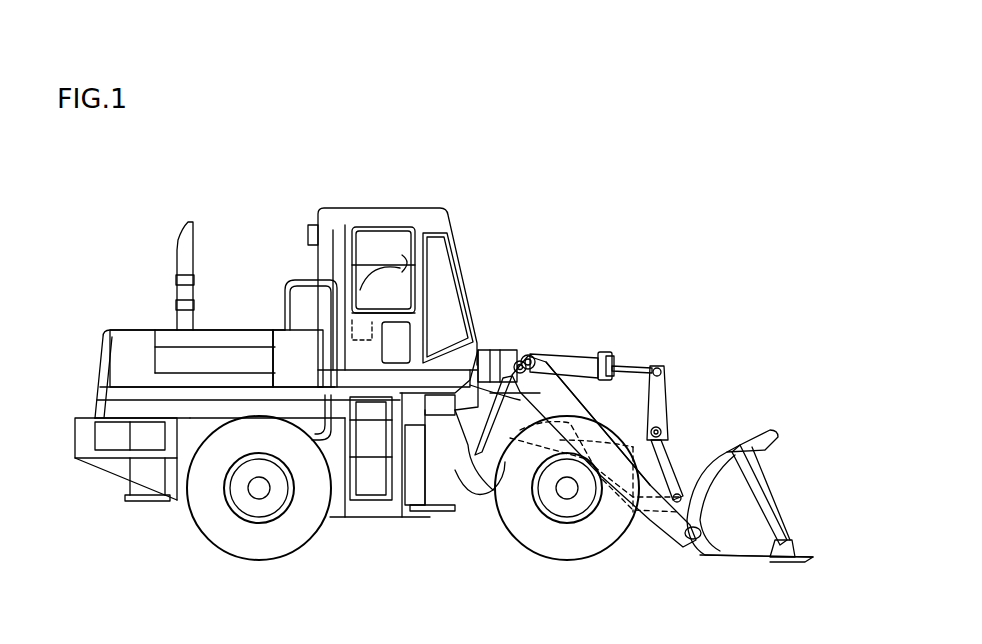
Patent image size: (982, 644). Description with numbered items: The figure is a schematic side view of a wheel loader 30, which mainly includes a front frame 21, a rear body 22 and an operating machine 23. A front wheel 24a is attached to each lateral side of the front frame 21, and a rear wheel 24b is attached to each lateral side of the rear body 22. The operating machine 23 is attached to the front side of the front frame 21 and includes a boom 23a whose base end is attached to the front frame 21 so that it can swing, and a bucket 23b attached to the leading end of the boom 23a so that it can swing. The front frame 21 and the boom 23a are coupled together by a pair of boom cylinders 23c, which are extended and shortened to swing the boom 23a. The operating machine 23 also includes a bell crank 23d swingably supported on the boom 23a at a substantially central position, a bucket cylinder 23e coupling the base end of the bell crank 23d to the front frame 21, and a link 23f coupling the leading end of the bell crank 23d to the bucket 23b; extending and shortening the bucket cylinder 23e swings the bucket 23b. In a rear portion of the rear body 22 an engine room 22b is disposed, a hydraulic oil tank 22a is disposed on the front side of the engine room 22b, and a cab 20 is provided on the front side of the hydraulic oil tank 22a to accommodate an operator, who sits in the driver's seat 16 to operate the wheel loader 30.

The wheel loader 30 is at (578, 180).
The cab 20 is at (433, 204).
The driver's seat 16 is at (378, 283).
The front frame 21 is at (472, 492).
The rear body 22 is at (177, 482).
The hydraulic oil tank 22a is at (290, 345).
The engine room 22b is at (170, 350).
The operating machine 23 is at (683, 396).
The boom 23a is at (575, 400).
The bucket 23b is at (745, 515).
The boom cylinder 23c is at (523, 398).
The bell crank 23d is at (660, 393).
The bucket cylinder 23e is at (565, 363).
The link 23f is at (677, 495).
The front wheel 24a is at (565, 555).
The rear wheel 24b is at (259, 553).